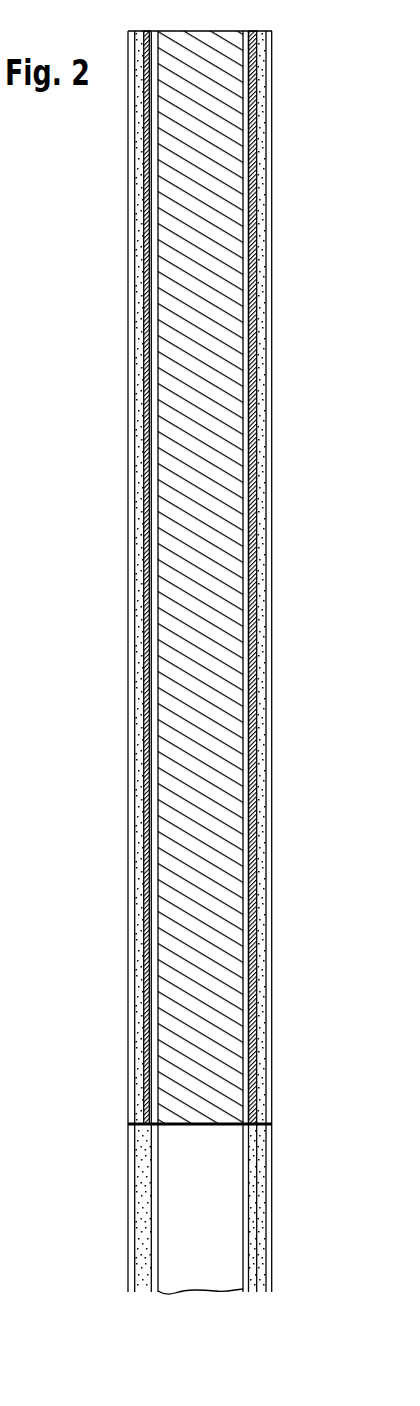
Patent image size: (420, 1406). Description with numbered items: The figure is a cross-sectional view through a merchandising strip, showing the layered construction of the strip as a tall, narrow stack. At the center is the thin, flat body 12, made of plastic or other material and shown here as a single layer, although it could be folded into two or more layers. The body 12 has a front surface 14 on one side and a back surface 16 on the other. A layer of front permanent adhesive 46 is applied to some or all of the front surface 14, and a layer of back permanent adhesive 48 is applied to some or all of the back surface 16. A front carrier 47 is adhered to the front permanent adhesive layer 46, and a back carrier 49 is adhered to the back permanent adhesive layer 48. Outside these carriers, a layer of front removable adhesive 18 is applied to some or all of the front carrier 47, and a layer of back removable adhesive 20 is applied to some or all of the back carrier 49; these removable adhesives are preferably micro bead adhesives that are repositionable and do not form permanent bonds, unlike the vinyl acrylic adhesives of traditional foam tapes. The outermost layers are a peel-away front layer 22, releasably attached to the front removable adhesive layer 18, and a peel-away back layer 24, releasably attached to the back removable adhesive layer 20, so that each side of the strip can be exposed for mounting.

The body 12 is at (213, 472).
The front surface 14 is at (158, 543).
The back surface 16 is at (242, 568).
The front removable adhesive layer 18 is at (141, 303).
The back removable adhesive layer 20 is at (260, 238).
The peel-away front layer 22 is at (135, 648).
The peel-away back layer 24 is at (268, 650).
The front permanent adhesive layer 46 is at (153, 380).
The front carrier 47 is at (151, 459).
The back permanent adhesive layer 48 is at (252, 325).
The back carrier 49 is at (252, 400).